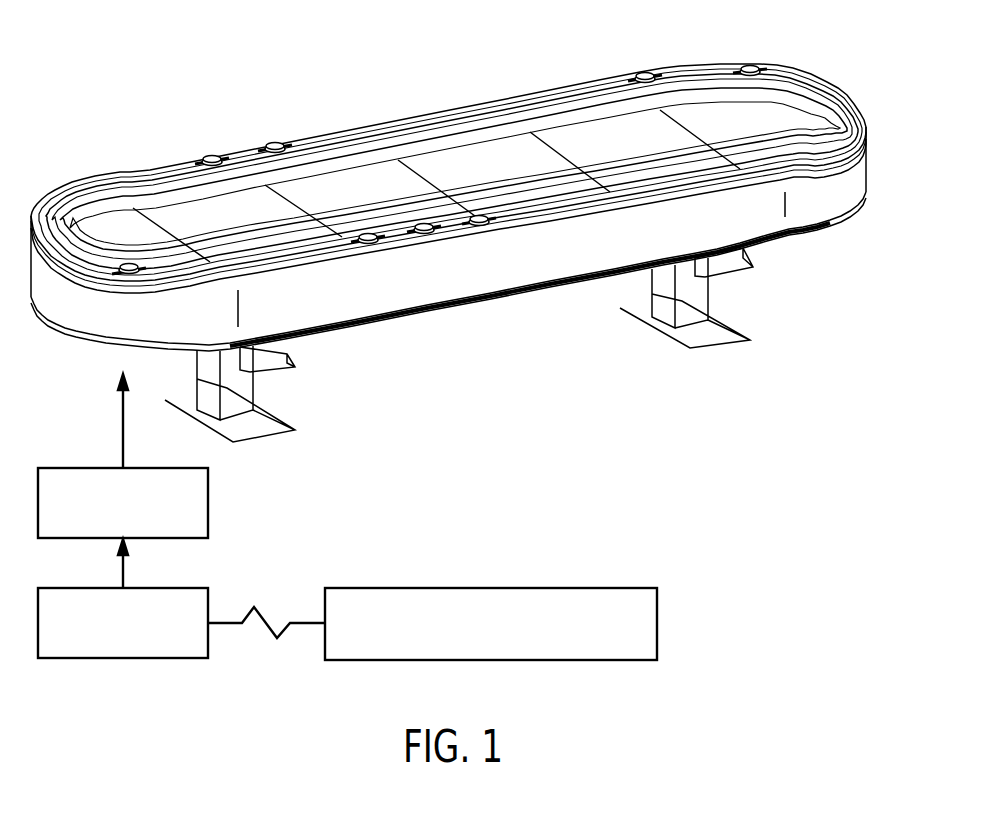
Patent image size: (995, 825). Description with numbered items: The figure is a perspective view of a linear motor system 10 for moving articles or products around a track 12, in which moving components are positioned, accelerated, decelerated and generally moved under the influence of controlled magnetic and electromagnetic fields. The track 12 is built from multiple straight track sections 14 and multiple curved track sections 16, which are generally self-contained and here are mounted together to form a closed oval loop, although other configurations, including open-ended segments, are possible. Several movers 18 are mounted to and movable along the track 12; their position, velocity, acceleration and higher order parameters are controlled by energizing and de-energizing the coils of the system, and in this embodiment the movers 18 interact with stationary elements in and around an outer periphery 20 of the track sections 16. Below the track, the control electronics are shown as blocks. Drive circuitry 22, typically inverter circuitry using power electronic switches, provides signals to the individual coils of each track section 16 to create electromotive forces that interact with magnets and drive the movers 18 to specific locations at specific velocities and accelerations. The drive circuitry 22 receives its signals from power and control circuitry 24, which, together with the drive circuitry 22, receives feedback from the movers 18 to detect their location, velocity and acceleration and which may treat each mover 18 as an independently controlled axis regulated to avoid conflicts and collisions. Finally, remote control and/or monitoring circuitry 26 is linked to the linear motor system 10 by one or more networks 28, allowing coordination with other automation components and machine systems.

The linear motor system 10 is at (781, 45).
The track 12 is at (178, 304).
The straight track sections 14 is at (323, 293).
The curved track sections 16 is at (99, 315).
The movers 18 is at (128, 263).
The outer periphery 20 is at (286, 307).
The drive circuitry 22 is at (208, 500).
The power and control circuitry 24 is at (208, 606).
The remote control and/or monitoring circuitry 26 is at (657, 626).
The networks 28 is at (308, 624).